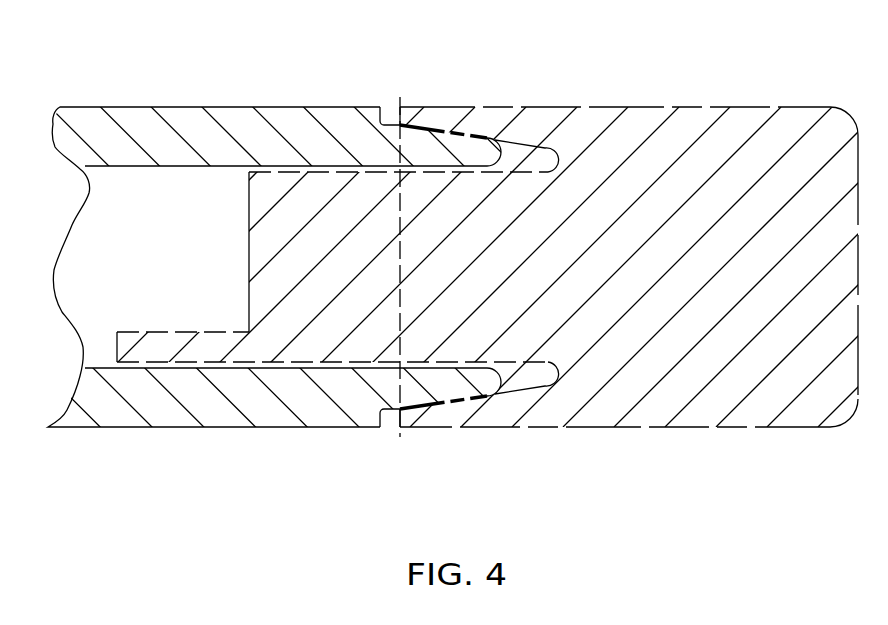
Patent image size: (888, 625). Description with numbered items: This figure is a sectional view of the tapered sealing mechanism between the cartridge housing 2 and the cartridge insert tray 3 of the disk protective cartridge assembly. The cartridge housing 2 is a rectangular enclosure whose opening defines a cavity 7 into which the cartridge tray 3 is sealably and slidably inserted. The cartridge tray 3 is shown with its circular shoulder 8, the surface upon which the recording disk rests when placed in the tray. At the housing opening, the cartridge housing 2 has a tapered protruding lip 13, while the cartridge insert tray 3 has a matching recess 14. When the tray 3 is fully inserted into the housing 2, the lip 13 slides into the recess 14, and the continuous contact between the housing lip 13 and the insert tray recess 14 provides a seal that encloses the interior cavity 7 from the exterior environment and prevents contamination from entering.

The cartridge housing 2 is at (135, 107).
The cartridge tray 3 is at (698, 162).
The cavity 7 is at (104, 270).
The circular shoulder 8 is at (228, 331).
The tapered protruding lip 13 is at (419, 130).
The recess 14 is at (518, 140).